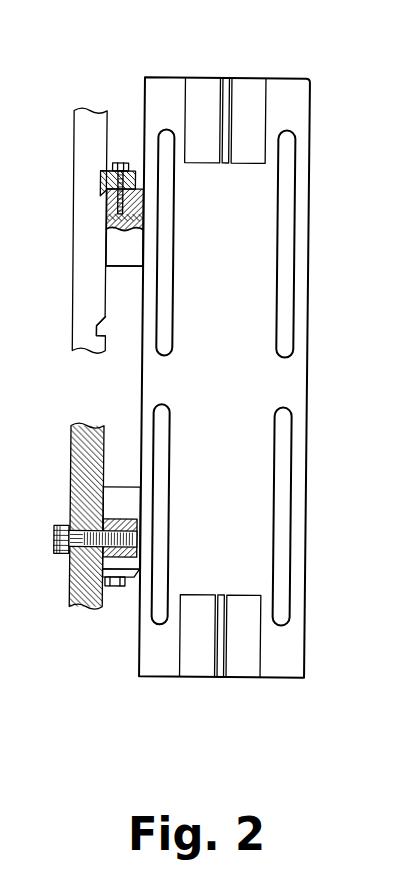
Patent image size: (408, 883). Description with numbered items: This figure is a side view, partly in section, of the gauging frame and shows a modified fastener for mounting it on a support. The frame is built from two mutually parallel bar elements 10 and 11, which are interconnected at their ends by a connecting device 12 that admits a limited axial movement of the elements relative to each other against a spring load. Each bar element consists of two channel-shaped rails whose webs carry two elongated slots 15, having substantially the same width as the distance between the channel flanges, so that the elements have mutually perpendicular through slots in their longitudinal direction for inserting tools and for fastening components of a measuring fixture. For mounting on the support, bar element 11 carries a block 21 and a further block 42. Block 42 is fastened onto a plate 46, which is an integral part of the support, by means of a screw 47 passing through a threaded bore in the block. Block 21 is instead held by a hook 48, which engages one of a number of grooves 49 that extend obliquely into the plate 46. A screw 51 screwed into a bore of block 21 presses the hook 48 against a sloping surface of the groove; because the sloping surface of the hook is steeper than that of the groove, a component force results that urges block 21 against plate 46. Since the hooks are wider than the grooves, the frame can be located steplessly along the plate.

The bar element 10 is at (322, 103).
The bar element 11 is at (140, 95).
The connecting device 12 is at (252, 68).
The elongated slot 15 is at (172, 240).
The block 21 is at (115, 248).
The block 42 is at (108, 503).
The plate 46 is at (80, 308).
The screw 47 is at (55, 540).
The hook 48 is at (105, 194).
The groove 49 is at (97, 340).
The screw 51 is at (118, 163).